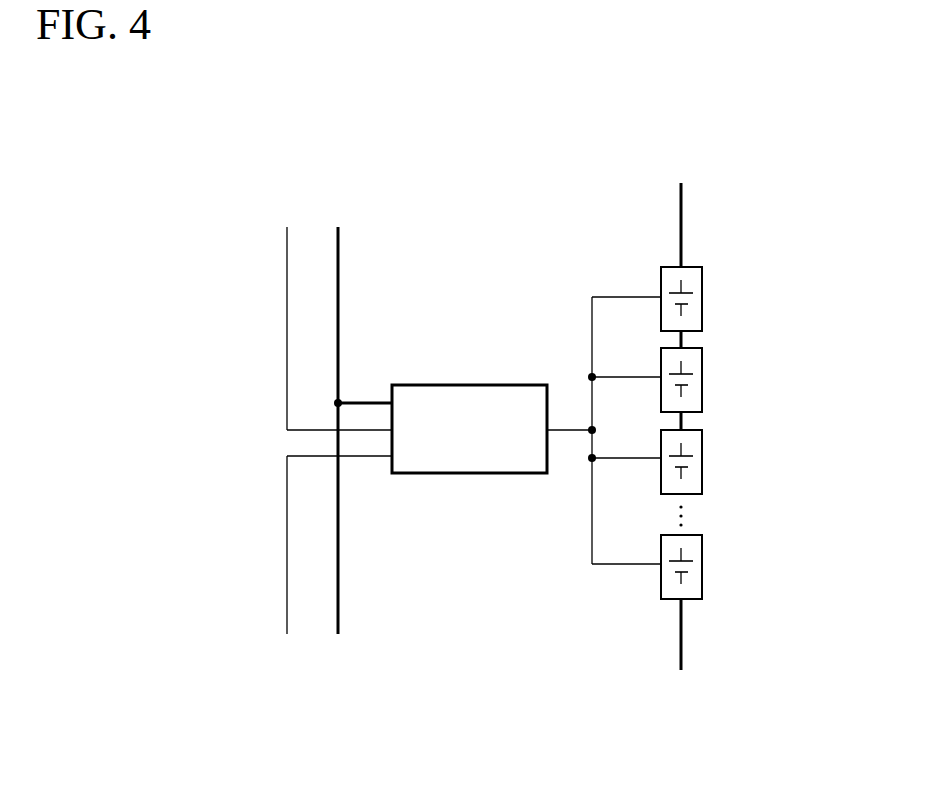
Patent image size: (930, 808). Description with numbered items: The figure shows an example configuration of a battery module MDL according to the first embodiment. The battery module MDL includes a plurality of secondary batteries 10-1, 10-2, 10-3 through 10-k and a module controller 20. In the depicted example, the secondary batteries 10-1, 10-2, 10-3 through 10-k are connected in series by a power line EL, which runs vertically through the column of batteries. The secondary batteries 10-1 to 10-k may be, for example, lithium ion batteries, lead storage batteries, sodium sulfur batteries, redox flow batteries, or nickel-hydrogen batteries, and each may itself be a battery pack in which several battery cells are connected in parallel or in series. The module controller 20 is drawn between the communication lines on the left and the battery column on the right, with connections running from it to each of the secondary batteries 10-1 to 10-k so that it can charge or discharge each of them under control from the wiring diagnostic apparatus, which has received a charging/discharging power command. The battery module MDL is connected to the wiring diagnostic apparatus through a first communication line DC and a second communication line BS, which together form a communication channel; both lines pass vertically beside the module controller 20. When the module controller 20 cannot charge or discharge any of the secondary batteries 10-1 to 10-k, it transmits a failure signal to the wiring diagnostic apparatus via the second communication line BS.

The battery module MDL is at (287, 171).
The first communication line DC is at (287, 258).
The second communication line BS is at (338, 265).
The module controller 20 is at (497, 385).
The power line EL is at (681, 212).
The secondary battery 10-1 is at (702, 297).
The secondary battery 10-2 is at (702, 378).
The secondary battery 10-3 is at (702, 459).
The secondary battery 10-k is at (702, 564).